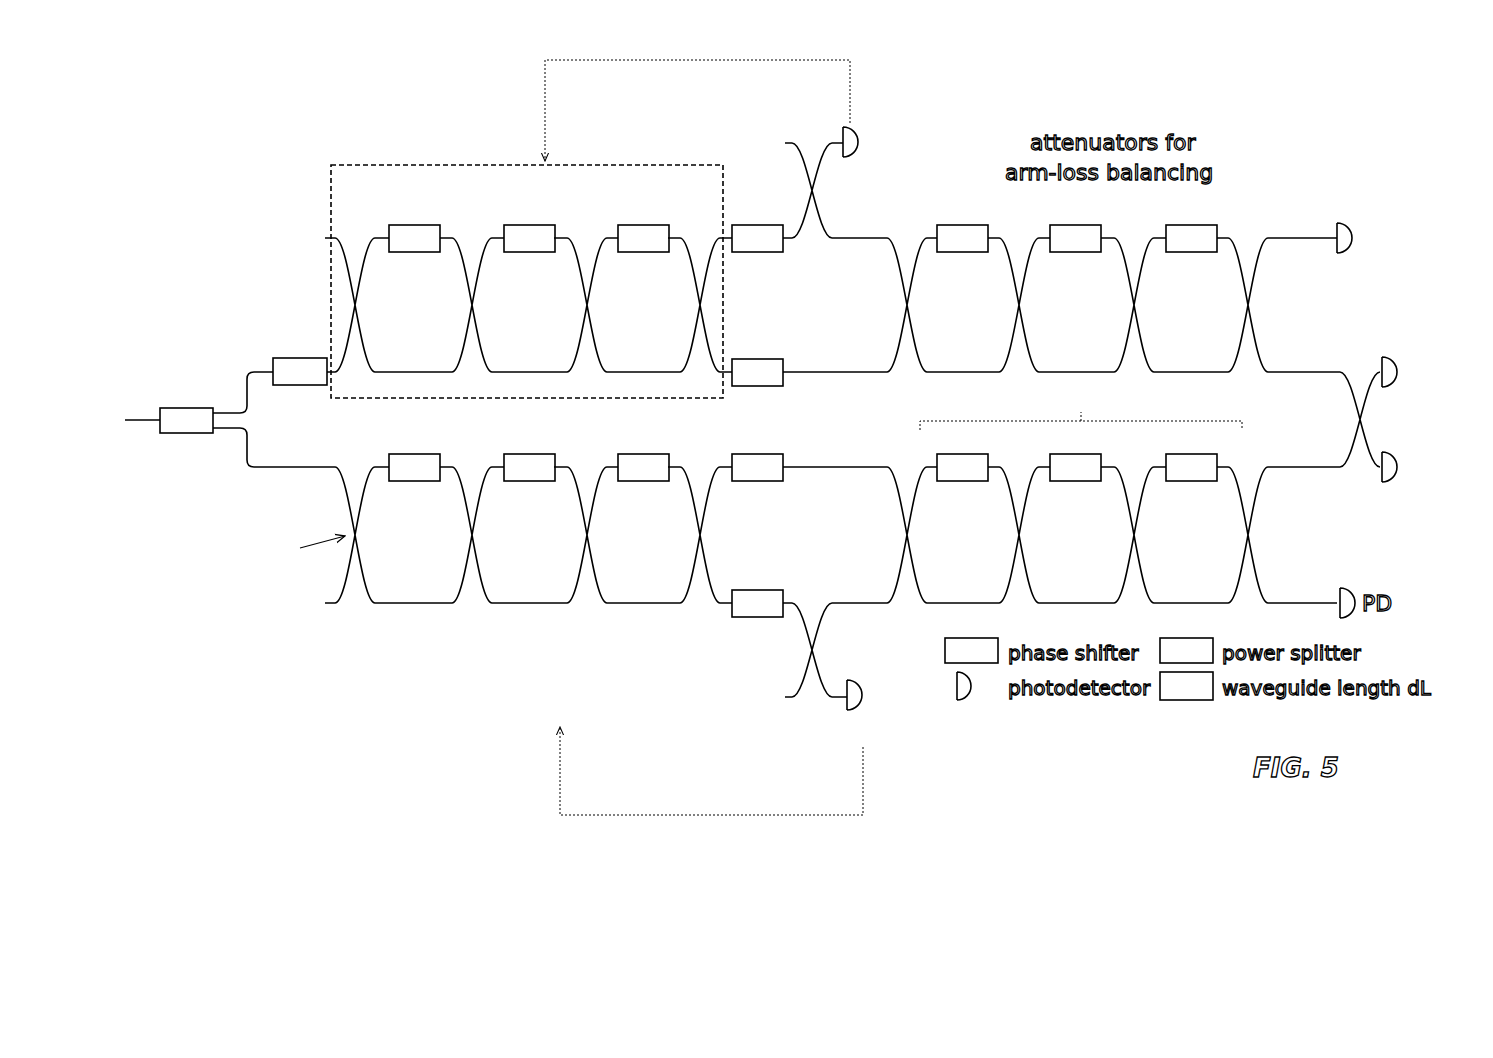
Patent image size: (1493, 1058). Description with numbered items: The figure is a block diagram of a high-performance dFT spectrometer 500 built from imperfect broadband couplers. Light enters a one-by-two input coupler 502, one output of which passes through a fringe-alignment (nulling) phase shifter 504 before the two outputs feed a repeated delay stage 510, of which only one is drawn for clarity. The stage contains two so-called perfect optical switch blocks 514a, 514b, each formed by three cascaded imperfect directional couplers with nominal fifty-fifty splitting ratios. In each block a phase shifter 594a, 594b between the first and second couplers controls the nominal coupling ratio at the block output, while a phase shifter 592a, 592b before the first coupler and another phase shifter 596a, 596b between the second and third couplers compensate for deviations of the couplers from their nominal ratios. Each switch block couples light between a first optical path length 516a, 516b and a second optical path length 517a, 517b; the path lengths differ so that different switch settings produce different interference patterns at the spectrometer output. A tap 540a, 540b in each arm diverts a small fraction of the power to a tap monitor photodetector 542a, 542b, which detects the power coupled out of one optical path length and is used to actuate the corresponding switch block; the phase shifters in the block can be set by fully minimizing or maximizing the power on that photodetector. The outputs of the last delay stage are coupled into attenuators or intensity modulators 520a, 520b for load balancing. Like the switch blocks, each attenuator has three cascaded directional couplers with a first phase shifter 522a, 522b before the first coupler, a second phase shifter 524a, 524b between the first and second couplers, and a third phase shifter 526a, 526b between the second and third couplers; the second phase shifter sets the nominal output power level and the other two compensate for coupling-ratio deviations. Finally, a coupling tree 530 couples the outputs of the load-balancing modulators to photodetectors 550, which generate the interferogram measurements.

The dFT spectrometer 500 is at (238, 176).
The 1×2 input coupler 502 is at (211, 419).
The fringe-alignment phase shifter 504 is at (275, 352).
The delay stage 510 is at (655, 734).
The optical switch block 514a is at (527, 280).
The optical switch block 514b is at (362, 618).
The first optical path length 516a is at (761, 236).
The first optical path length 516b is at (761, 465).
The second optical path length 517a is at (761, 370).
The second optical path length 517b is at (761, 602).
The attenuator/intensity modulator 520a is at (1077, 229).
The attenuator/intensity modulator 520b is at (1081, 443).
The first phase shifter 522a is at (962, 236).
The first phase shifter 522b is at (962, 465).
The second phase shifter 524a is at (1075, 236).
The second phase shifter 524b is at (1075, 465).
The third phase shifter 526a is at (1191, 236).
The third phase shifter 526b is at (1191, 465).
The coupling tree 530 is at (1223, 210).
The tap 540a is at (860, 190).
The tap 540b is at (852, 650).
The tap monitor photodetector 542a is at (895, 142).
The tap monitor photodetector 542b is at (875, 708).
The photodetectors 550 is at (1336, 210).
The phase shifter 592a is at (414, 236).
The phase shifter 592b is at (414, 465).
The phase shifter 594a is at (529, 236).
The phase shifter 594b is at (529, 465).
The phase shifter 596a is at (643, 236).
The phase shifter 596b is at (643, 465).